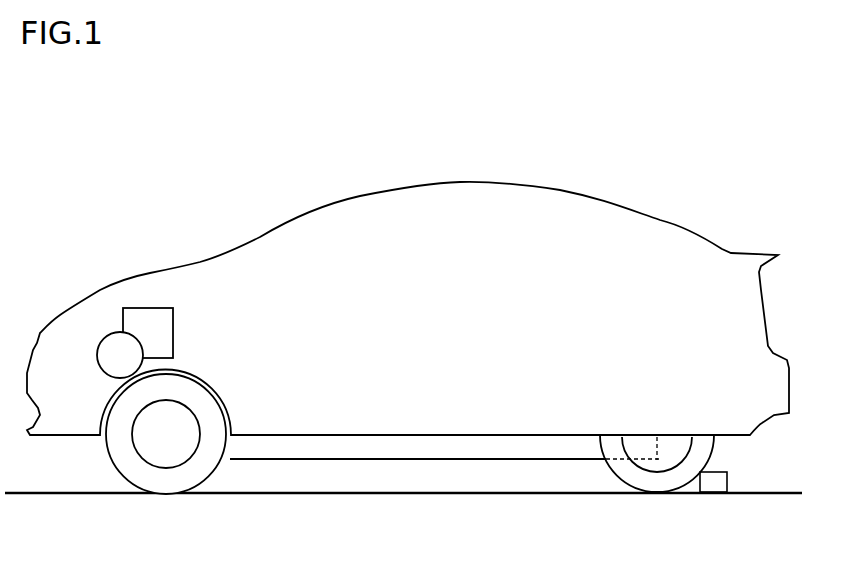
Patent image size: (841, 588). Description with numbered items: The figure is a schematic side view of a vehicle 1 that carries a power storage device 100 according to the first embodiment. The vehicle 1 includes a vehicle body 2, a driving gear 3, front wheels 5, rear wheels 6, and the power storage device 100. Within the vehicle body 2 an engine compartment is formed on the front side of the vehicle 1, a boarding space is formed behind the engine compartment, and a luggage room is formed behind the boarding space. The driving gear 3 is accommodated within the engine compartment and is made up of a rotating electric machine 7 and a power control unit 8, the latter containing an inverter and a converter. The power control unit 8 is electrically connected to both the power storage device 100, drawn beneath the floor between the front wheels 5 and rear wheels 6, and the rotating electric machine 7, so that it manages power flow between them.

The vehicle 1 is at (632, 151).
The vehicle body 2 is at (470, 182).
The driving gear 3 is at (134, 290).
The front wheels 5 is at (166, 478).
The rear wheels 6 is at (657, 478).
The rotating electric machine 7 is at (111, 332).
The power control unit 8 is at (150, 308).
The power storage device 100 is at (373, 466).